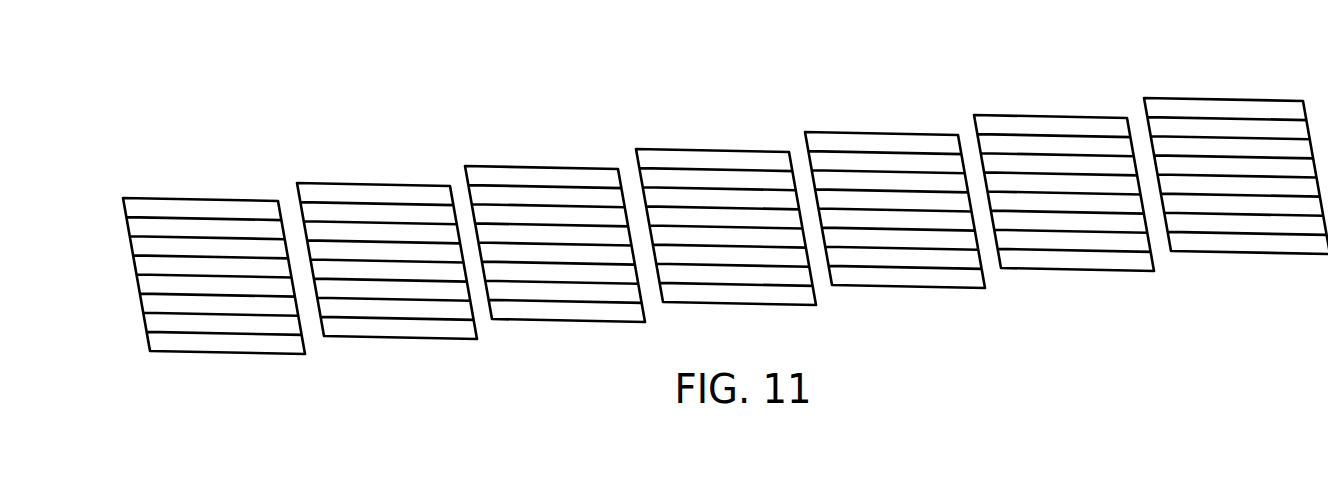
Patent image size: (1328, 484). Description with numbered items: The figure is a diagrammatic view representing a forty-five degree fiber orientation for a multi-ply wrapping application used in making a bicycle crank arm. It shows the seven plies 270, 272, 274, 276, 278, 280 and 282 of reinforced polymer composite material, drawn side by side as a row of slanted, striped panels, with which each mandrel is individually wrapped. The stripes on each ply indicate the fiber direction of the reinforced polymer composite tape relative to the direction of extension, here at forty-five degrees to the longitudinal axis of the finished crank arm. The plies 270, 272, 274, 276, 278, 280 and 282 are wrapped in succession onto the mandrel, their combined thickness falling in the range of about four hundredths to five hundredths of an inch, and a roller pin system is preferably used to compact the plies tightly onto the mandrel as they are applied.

The ply 270 is at (196, 213).
The ply 272 is at (360, 192).
The ply 274 is at (530, 179).
The ply 276 is at (705, 161).
The ply 278 is at (877, 153).
The ply 280 is at (1033, 128).
The ply 282 is at (1222, 112).